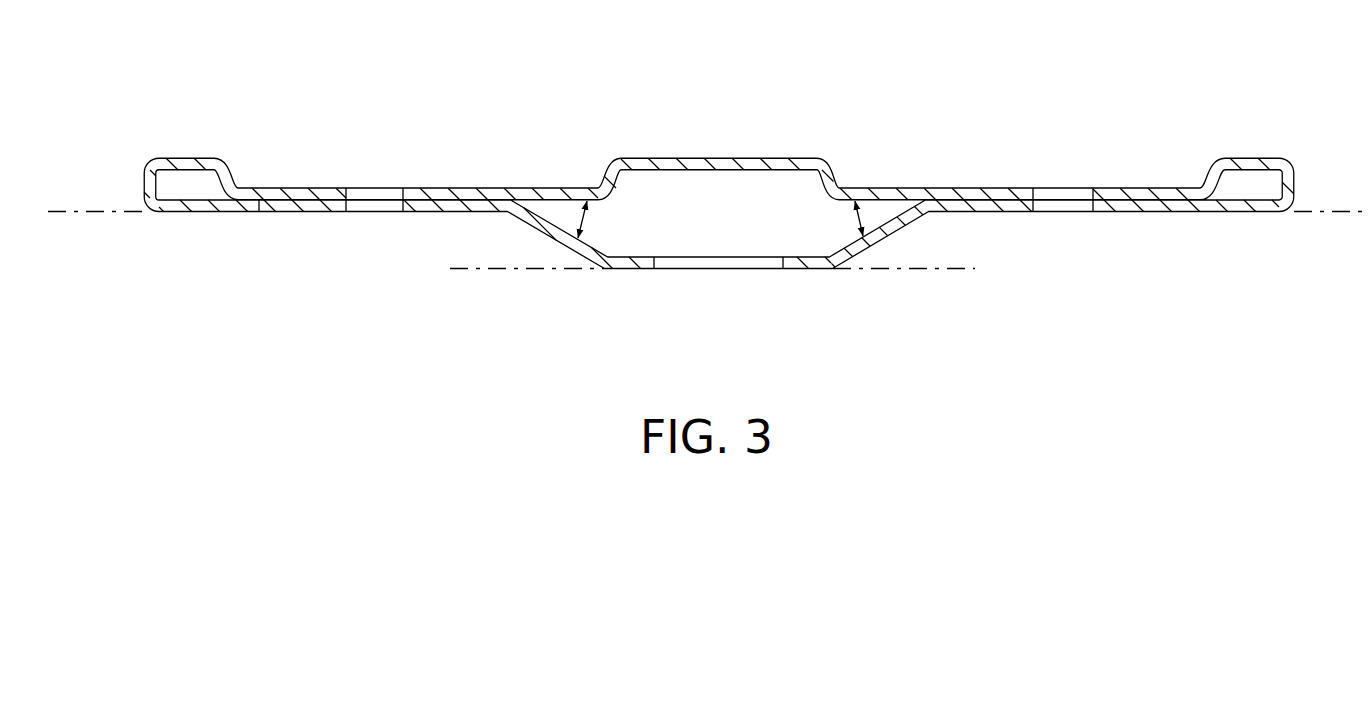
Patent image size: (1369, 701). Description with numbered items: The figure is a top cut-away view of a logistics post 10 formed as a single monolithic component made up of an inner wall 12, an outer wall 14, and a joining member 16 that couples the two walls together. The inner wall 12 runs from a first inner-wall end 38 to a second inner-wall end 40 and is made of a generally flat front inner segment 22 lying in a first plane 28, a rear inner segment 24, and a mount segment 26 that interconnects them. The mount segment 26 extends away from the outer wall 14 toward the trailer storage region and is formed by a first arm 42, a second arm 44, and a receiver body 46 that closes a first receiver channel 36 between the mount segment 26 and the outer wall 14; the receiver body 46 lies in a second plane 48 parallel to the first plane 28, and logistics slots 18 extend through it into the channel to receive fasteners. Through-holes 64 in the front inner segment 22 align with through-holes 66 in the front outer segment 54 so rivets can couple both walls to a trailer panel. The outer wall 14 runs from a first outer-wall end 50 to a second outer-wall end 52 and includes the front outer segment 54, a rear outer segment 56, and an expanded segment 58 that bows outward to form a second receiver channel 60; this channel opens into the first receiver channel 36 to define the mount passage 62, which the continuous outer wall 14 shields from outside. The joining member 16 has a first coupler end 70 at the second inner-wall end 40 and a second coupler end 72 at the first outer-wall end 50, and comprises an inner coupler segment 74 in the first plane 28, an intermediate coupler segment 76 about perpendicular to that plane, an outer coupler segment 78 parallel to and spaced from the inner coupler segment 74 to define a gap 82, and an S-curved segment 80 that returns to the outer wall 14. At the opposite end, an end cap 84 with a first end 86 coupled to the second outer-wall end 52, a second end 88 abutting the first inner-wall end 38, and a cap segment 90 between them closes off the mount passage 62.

The logistics post 10 is at (1004, 358).
The inner wall 12 is at (821, 278).
The outer wall 14 is at (774, 150).
The joining member 16 is at (1304, 172).
The logistics slots 18 is at (720, 270).
The front inner segment 22 is at (427, 213).
The rear inner segment 24 is at (1012, 213).
The mount segment 26 is at (623, 270).
The first plane 28 is at (73, 215).
The first receiver channel 36 is at (636, 240).
The first inner-wall end 38 is at (293, 213).
The second inner-wall end 40 is at (1132, 213).
The first arm 42 is at (522, 224).
The second arm 44 is at (925, 222).
The receiver body 46 is at (797, 270).
The second plane 48 is at (530, 272).
The first outer-wall end 50 is at (1115, 193).
The second outer-wall end 52 is at (292, 193).
The front outer segment 54 is at (426, 193).
The rear outer segment 56 is at (996, 193).
The expanded segment 58 is at (717, 158).
The second receiver channel 60 is at (678, 181).
The mount passage 62 is at (607, 170).
The through-holes 64 is at (397, 205).
The through-holes 66 is at (375, 193).
The first coupler end 70 is at (1188, 215).
The second coupler end 72 is at (1163, 193).
The inner coupler segment 74 is at (1250, 215).
The intermediate coupler segment 76 is at (1296, 187).
The outer coupler segment 78 is at (1245, 158).
The S-curved segment 80 is at (1203, 173).
The gap 82 is at (1270, 192).
The end cap 84 is at (136, 182).
The first end 86 is at (244, 190).
The second end 88 is at (233, 213).
The cap segment 90 is at (185, 213).